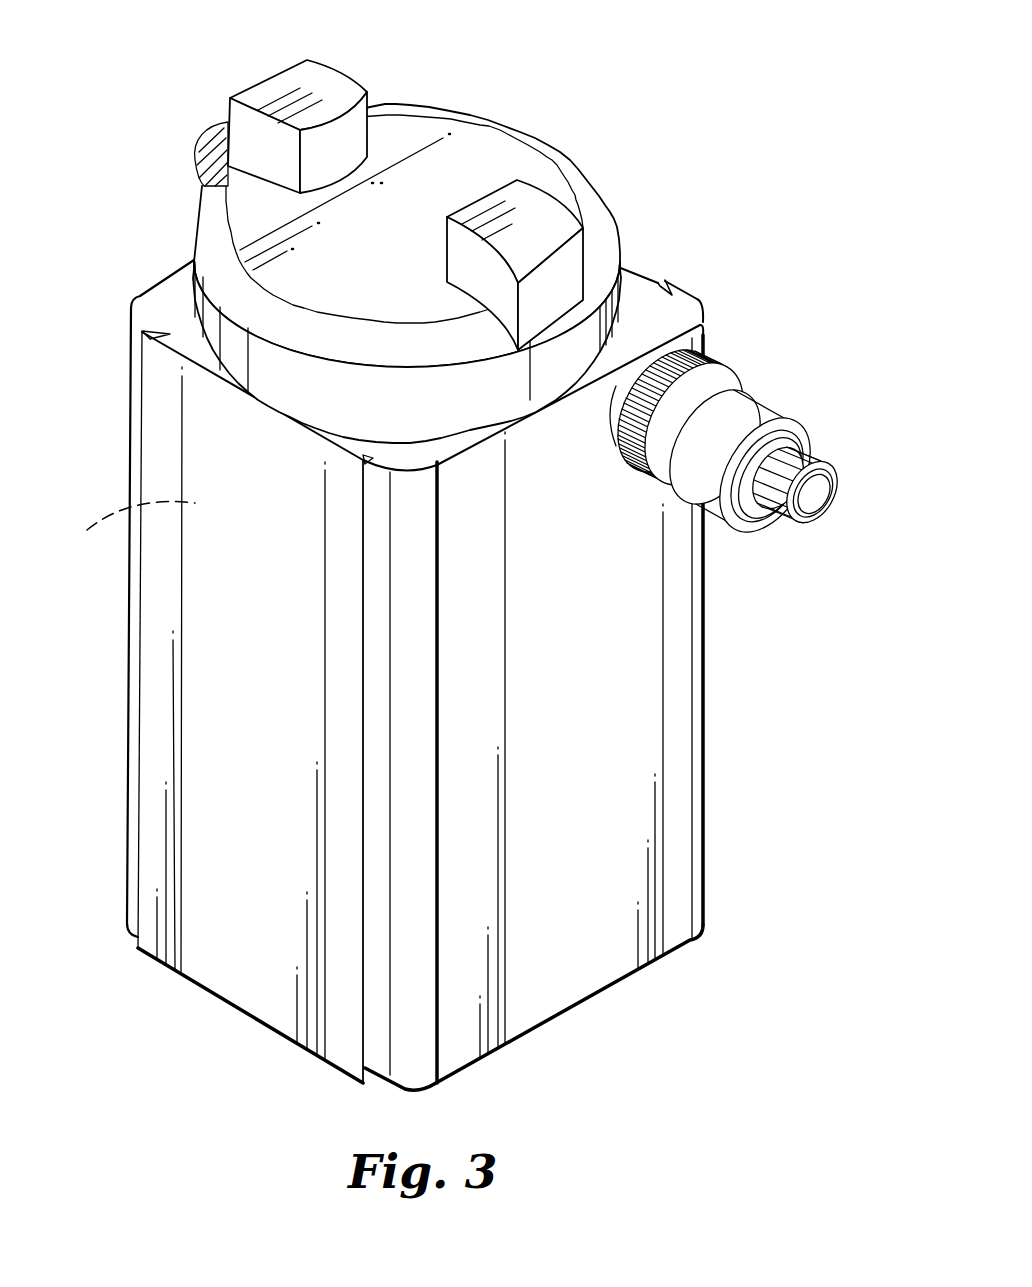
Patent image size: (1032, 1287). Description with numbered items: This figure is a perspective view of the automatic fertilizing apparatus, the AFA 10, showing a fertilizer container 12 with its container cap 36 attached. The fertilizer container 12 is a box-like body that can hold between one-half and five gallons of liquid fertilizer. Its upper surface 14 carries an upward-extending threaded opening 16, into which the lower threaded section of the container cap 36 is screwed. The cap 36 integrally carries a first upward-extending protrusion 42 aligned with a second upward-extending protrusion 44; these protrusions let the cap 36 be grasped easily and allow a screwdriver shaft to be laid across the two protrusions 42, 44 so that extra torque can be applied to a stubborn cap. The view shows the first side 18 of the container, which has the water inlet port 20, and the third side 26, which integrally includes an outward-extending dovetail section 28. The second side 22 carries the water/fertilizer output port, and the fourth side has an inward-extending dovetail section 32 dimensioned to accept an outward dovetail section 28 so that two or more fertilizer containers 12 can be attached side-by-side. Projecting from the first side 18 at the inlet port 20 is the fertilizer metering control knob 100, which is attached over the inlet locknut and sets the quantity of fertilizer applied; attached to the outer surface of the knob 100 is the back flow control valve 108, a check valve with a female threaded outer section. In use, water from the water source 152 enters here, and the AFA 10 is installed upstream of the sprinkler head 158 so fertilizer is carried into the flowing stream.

The automatic fertilizing apparatus 10 is at (481, 563).
The fertilizer container 12 is at (703, 618).
The upper surface 14 is at (165, 298).
The threaded opening 16 is at (600, 230).
The first side 18 is at (628, 713).
The water inlet port 20 is at (675, 345).
The second side 22 is at (123, 534).
The third side 26 is at (220, 677).
The outward-extending dovetail section 28 is at (365, 545).
The inward-extending dovetail section 32 is at (660, 283).
The container cap 36 is at (512, 160).
The first upward-extending protrusion 42 is at (530, 208).
The second upward-extending protrusion 44 is at (262, 92).
The fertilizer metering control knob 100 is at (720, 380).
The back flow control valve 108 is at (720, 498).
The water source 152 is at (843, 507).
The sprinkler head 158 is at (203, 140).